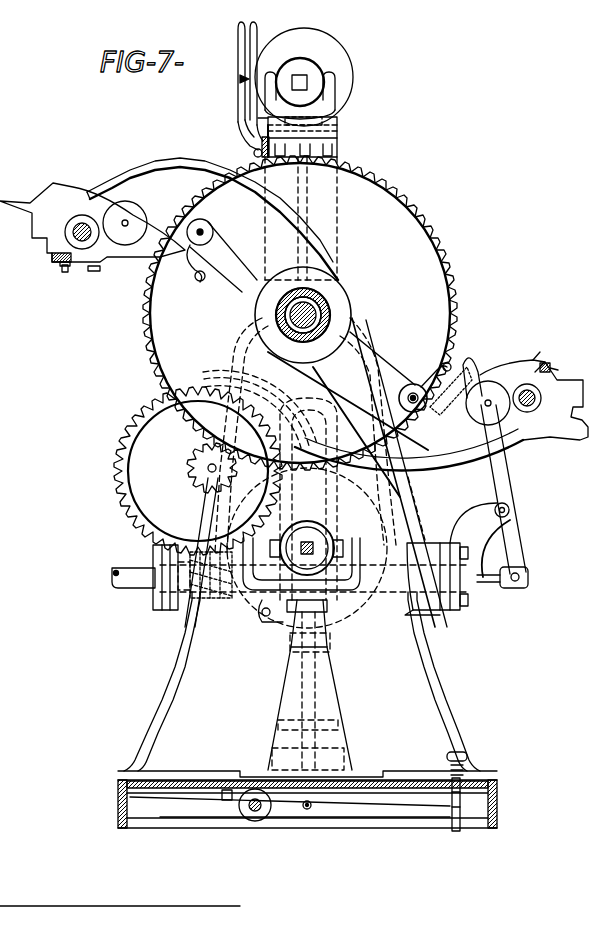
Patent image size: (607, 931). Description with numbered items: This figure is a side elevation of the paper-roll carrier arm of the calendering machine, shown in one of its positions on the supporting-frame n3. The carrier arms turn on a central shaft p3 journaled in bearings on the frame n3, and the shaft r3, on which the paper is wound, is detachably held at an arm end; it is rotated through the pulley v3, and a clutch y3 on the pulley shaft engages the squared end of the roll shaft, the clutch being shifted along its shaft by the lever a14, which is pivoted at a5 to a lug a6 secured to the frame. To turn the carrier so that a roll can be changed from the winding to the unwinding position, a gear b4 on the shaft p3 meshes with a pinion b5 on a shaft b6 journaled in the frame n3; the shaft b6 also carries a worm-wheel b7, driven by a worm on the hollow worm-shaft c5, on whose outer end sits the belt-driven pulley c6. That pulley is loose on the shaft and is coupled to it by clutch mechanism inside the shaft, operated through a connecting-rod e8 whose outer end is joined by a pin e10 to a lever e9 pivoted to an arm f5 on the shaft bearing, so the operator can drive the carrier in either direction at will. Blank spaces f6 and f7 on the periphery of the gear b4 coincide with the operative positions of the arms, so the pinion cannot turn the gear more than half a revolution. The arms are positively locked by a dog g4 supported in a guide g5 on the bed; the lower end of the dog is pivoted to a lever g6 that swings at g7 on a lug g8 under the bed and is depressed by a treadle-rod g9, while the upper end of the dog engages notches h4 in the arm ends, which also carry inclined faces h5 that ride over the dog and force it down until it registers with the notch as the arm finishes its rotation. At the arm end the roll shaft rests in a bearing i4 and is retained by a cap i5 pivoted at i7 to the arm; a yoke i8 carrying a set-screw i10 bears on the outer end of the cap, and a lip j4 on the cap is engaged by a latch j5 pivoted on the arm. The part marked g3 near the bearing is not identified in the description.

The clutch y3 is at (342, 59).
The lever a14 is at (245, 56).
The lug a6 is at (263, 140).
The pivot a5 is at (268, 130).
The blank space f6 is at (235, 130).
The gear b4 is at (430, 276).
The central shaft p3 is at (163, 160).
The lip j4 is at (97, 270).
The latch j5 is at (413, 384).
The notch h4 is at (582, 424).
The inclined face h5 is at (44, 189).
The screw g3 is at (63, 267).
The bearing i4 is at (71, 215).
The pivot i7 is at (125, 220).
The cap i5 is at (503, 375).
The shaft r3 is at (525, 390).
The set-screw i10 is at (547, 363).
The yoke i8 is at (567, 349).
The lever e9 is at (510, 491).
The arm f5 is at (488, 522).
The pin e10 is at (530, 576).
The connecting-rod e8 is at (487, 584).
The pulley c6 is at (476, 533).
The blank space f7 is at (399, 472).
The pulley v3 is at (430, 613).
The worm-wheel b7 is at (142, 410).
The pinion b5 is at (190, 461).
The shaft b6 is at (193, 484).
The worm-shaft c5 is at (112, 584).
The supporting-frame n3 is at (205, 622).
The guide g5 is at (323, 687).
The dog g4 is at (283, 607).
The lug g8 is at (233, 793).
The lever g6 is at (290, 817).
The pivot g7 is at (240, 807).
The treadle-rod g9 is at (497, 793).